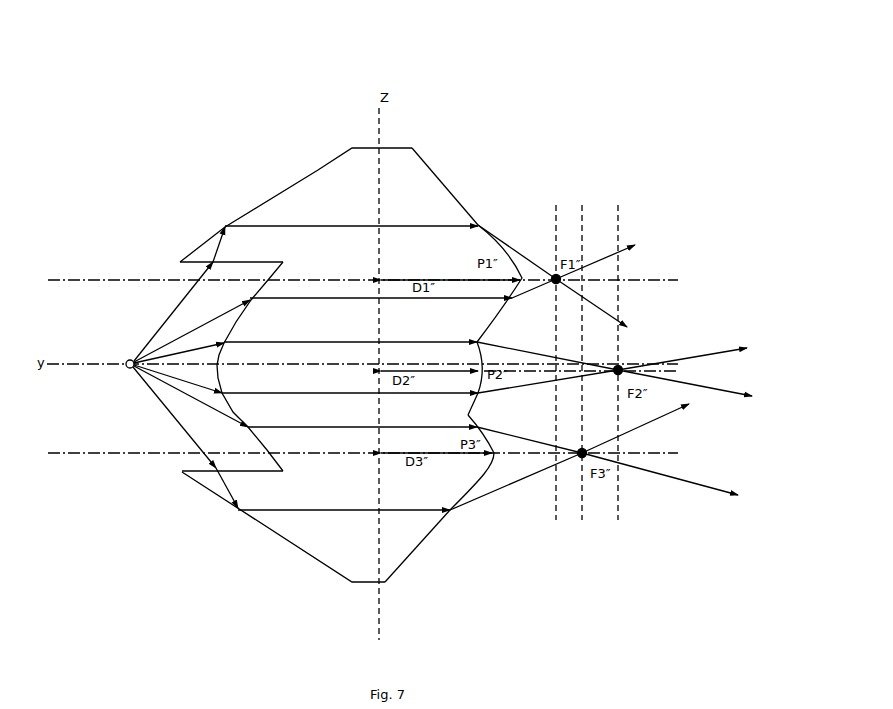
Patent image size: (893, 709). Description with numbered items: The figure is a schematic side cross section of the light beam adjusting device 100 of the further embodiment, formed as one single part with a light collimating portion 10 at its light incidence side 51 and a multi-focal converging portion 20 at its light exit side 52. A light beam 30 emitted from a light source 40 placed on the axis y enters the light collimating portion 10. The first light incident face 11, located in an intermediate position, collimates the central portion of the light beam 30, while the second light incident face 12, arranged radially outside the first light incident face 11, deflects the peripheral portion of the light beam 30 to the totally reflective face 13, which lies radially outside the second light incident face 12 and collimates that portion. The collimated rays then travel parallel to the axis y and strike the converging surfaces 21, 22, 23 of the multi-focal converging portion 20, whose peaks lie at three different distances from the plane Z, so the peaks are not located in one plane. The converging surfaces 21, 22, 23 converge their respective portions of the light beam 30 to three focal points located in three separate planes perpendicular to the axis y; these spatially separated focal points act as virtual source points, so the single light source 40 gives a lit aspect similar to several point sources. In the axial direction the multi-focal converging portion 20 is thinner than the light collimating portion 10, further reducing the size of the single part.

The light beam adjusting device 100 is at (396, 16).
The light collimating portion 10 is at (135, 268).
The first light incident face 11 is at (237, 413).
The second light incident face 12 is at (258, 261).
The totally reflective face 13 is at (245, 213).
The multi-focal converging portion 20 is at (497, 205).
The first converging surface 21 is at (463, 207).
The second converging surface 22 is at (477, 375).
The third converging surface 23 is at (473, 480).
The light beam 30 is at (150, 326).
The light source 40 is at (127, 368).
The light incidence side 51 is at (150, 446).
The light exit side 52 is at (482, 543).